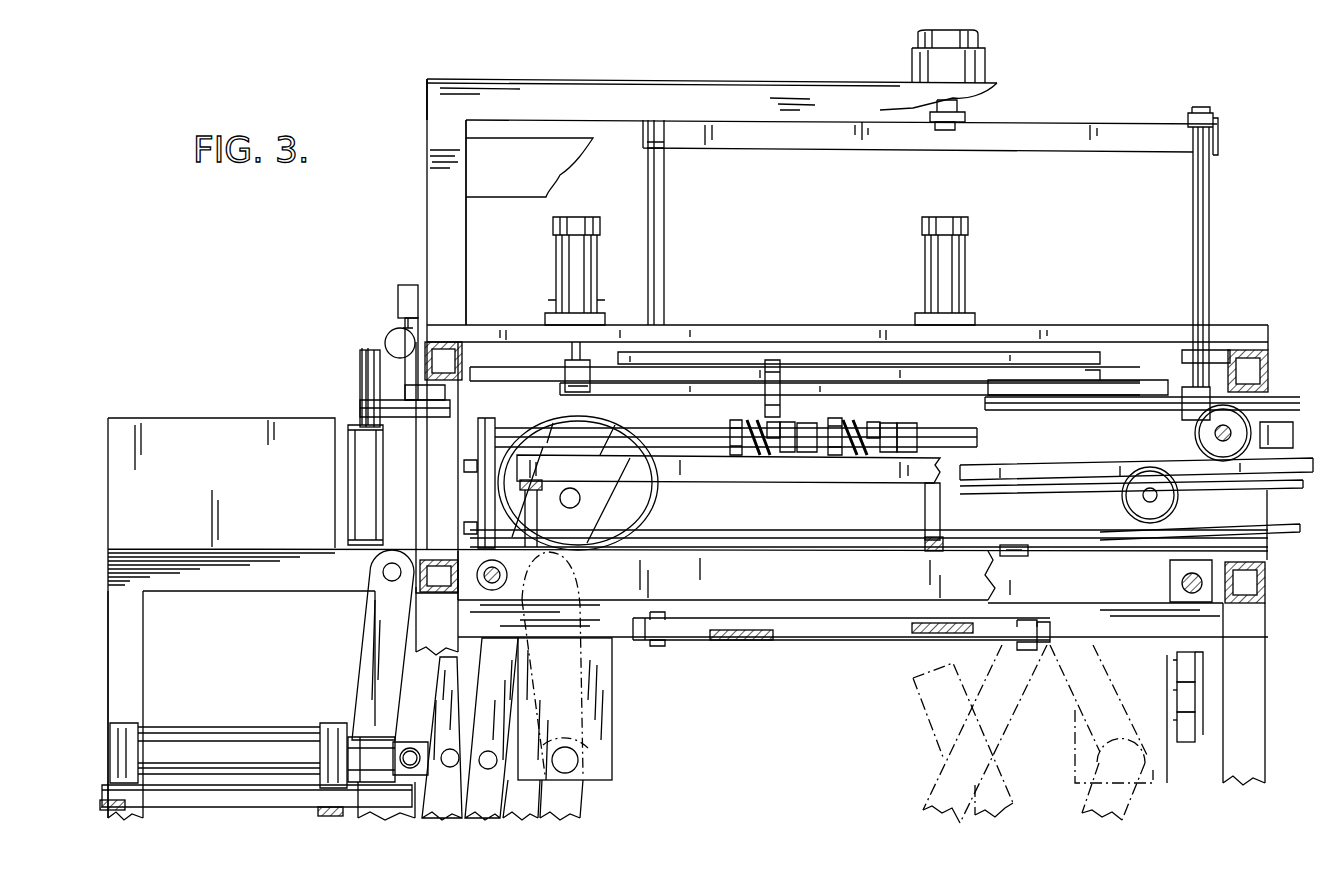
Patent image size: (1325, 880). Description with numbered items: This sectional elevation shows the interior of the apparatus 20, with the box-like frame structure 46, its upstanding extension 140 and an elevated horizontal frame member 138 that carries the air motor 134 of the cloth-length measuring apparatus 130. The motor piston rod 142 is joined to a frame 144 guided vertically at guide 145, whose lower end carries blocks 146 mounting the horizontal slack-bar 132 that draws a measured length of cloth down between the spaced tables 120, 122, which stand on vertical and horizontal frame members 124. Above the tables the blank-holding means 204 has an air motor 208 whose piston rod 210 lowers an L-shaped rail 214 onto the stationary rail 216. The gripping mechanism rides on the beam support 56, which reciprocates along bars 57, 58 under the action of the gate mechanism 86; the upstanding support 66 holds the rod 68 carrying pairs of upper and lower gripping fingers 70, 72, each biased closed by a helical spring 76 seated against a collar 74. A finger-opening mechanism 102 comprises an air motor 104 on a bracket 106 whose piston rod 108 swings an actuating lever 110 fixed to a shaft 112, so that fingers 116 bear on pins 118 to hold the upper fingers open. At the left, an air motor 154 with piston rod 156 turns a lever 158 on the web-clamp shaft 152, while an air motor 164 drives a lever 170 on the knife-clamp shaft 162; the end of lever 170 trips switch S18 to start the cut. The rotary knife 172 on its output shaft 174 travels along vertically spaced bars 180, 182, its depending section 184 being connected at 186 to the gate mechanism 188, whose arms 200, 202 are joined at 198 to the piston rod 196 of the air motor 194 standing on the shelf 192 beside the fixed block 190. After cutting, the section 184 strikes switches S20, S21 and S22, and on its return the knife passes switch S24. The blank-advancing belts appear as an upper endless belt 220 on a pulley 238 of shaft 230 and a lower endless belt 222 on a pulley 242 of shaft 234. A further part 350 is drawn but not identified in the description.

The apparatus 20 is at (372, 78).
The frame structure 46 is at (748, 90).
The beam support 56 is at (863, 594).
The bar 57 is at (508, 576).
The bar 58 is at (1182, 583).
The upstanding support 66 is at (478, 497).
The rod 68 is at (978, 436).
The upper gripping finger 70 is at (793, 450).
The lower gripping finger 72 is at (810, 450).
The collar 74 is at (730, 450).
The helical spring 76 is at (752, 450).
The gate mechanism 86 is at (758, 646).
The finger-opening mechanism 102 is at (553, 243).
The air motor 104 is at (578, 218).
The bracket 106 is at (549, 300).
The air motor piston rod 108 is at (592, 318).
The actuating lever 110 is at (585, 365).
The shaft 112 is at (702, 370).
The fingers 116 is at (772, 360).
The pin 118 is at (775, 450).
The table 120 is at (890, 482).
The table 122 is at (1040, 488).
The frame members 124 is at (568, 508).
The cloth-length measuring apparatus 130 is at (1105, 122).
The slack-bar 132 is at (1125, 408).
The air motor 134 is at (912, 38).
The horizontal frame member 138 is at (584, 82).
The upstanding extension 140 is at (426, 158).
The motor piston rod 142 is at (960, 104).
The frame 144 is at (662, 190).
The guide 145 is at (1208, 360).
The blocks 146 is at (1190, 390).
The rotatable shaft 152 is at (414, 422).
The air motor 154 is at (355, 492).
The piston rod 156 is at (362, 425).
The lever 158 is at (362, 378).
The rotatable shaft 162 is at (430, 388).
The air motor 164 is at (390, 335).
The lever 170 is at (412, 365).
The rotary knife 172 is at (648, 505).
The output shaft 174 is at (580, 505).
The bar 180 is at (466, 466).
The bar 182 is at (466, 528).
The depending section 184 is at (614, 692).
The connection 186 is at (578, 760).
The gate mechanism 188 is at (616, 788).
The block 190 is at (358, 735).
The shelf 192 is at (266, 794).
The air motor 194 is at (210, 738).
The piston rod 196 is at (378, 748).
The connection 198 is at (411, 742).
The arm 200 is at (375, 647).
The arm 202 is at (445, 795).
The blank-holding means 204 is at (970, 268).
The air motor 208 is at (925, 268).
The piston rod 210 is at (940, 352).
The L-shaped rail 214 is at (1145, 362).
The stationary rail 216 is at (1058, 445).
The upper endless belt 220 is at (1283, 400).
The lower endless belt 222 is at (1245, 528).
The shaft 230 is at (1200, 437).
The shaft 234 is at (1143, 495).
The pulley 238 is at (1205, 446).
The pulley 242 is at (1128, 508).
The block 350 is at (930, 130).
The switch S18 is at (398, 295).
The switch S20 is at (1190, 667).
The switch S21 is at (1190, 697).
The switch S22 is at (1190, 729).
The switch S24 is at (1014, 558).